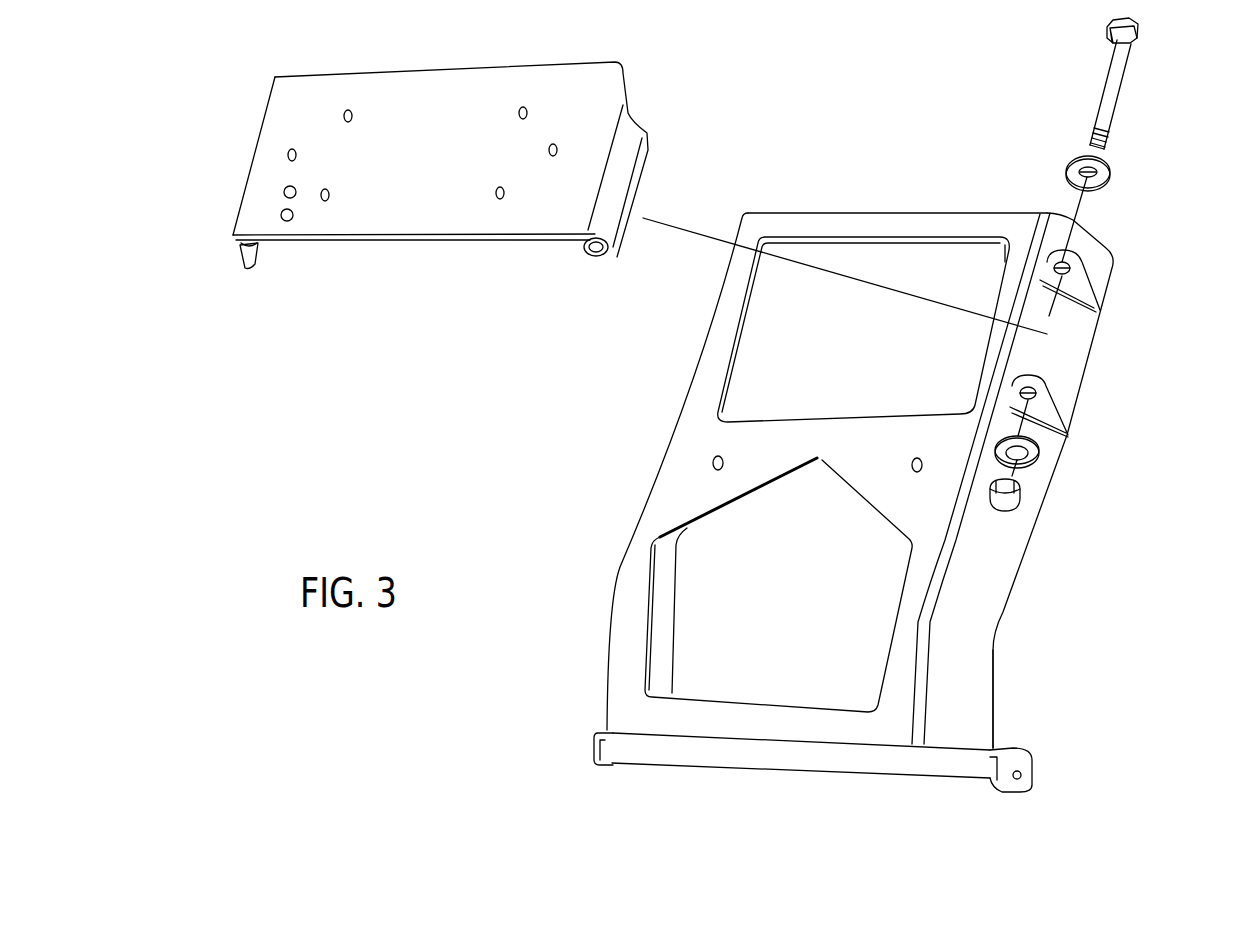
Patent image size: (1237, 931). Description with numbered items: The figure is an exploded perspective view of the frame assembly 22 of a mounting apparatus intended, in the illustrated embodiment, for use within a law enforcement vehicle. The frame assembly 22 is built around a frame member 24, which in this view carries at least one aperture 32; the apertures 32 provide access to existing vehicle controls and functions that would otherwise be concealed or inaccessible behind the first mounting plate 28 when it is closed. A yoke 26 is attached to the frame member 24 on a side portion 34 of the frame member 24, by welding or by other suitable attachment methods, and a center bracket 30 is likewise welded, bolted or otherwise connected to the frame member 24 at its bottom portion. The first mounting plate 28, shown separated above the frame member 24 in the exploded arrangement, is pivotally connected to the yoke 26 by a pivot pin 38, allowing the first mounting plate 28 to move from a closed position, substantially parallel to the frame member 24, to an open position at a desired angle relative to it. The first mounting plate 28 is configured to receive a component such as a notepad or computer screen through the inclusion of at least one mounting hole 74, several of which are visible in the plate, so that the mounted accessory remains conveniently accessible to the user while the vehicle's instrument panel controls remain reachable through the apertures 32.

The frame assembly 22 is at (807, 134).
The frame member 24 is at (657, 482).
The yoke 26 is at (1077, 357).
The first mounting plate 28 is at (387, 222).
The center bracket 30 is at (732, 757).
The aperture 32 is at (845, 366).
The side portion 34 is at (985, 533).
The pivot pin 38 is at (1117, 87).
The mounting hole 74 is at (548, 150).